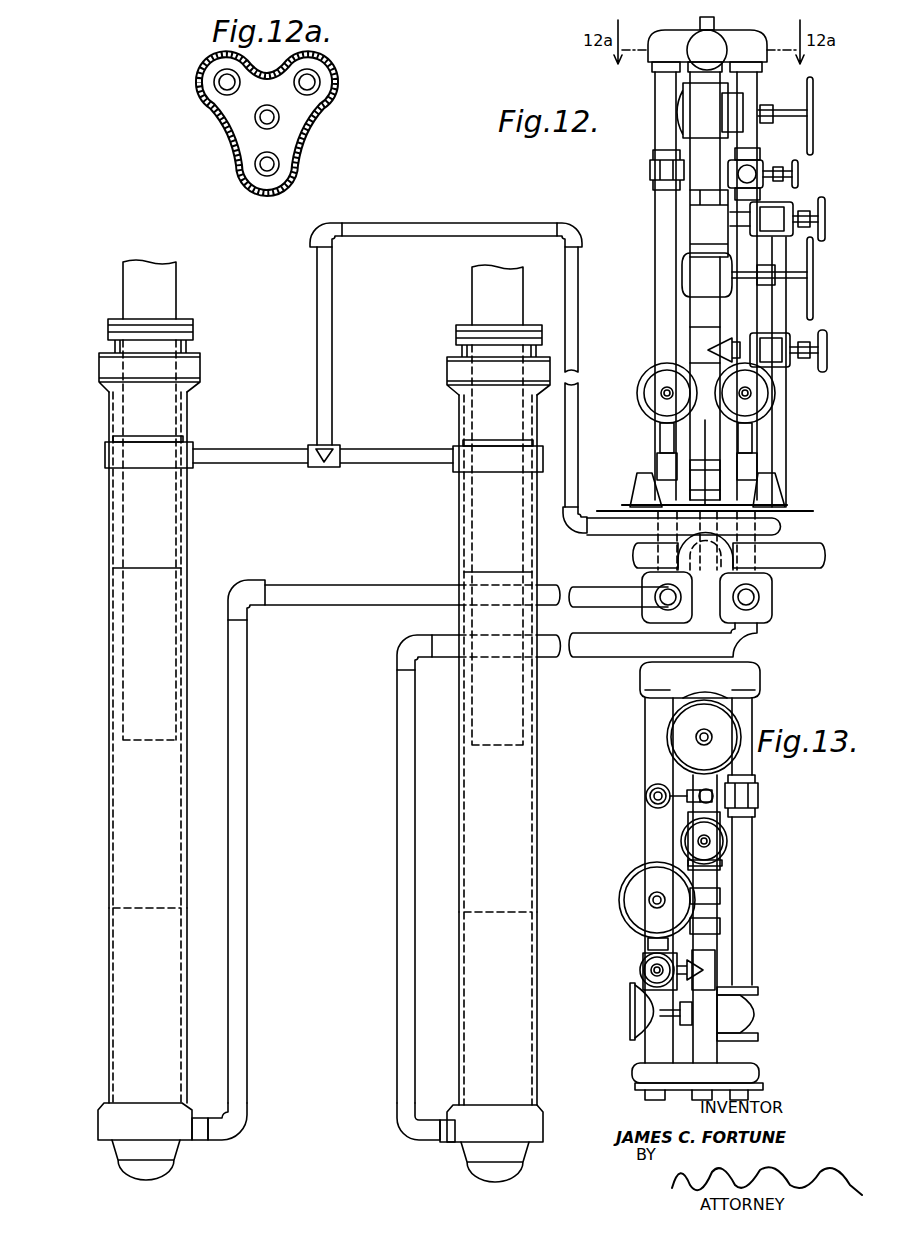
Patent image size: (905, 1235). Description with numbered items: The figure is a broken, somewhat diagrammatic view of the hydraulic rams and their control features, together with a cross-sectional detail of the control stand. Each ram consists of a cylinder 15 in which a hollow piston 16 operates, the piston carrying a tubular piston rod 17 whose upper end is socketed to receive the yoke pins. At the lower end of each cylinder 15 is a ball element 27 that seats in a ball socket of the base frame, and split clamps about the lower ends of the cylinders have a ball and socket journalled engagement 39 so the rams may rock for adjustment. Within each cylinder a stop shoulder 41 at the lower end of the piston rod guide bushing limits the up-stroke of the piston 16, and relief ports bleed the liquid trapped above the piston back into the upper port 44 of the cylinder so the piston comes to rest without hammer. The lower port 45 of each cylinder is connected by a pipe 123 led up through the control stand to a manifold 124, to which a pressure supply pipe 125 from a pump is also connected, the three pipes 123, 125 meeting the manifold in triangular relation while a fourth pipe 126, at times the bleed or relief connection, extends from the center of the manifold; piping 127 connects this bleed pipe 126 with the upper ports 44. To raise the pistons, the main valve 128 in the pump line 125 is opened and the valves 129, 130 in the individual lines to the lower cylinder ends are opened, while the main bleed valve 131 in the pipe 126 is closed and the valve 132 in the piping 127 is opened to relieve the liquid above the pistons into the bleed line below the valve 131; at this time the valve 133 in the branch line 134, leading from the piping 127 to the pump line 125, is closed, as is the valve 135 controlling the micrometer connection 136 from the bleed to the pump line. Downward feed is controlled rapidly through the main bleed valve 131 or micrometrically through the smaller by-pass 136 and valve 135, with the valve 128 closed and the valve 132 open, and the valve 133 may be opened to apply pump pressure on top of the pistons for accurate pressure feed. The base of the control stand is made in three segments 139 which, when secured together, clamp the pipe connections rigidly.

In FIG. 12, the cylinder 15 is at (109, 928).
In FIG. 12, the hollow piston 16 is at (113, 846).
In FIG. 12, the tubular piston rod 17 is at (176, 290).
In FIG. 12, the ball element 27 is at (150, 1178).
In FIG. 12, the ball and socket journalled engagement 39 is at (100, 1105).
In FIG. 12, the stop shoulder 41 is at (183, 440).
In FIG. 12, the upper port 44 is at (193, 465).
In FIG. 12, the lower port 45 is at (200, 1142).
In FIG. 12A, the pipe 123 is at (222, 92).
In FIG. 12, the pipe 123 is at (397, 800).
In FIG. 13, the pipe 123 is at (750, 934).
In FIG. 12A, the manifold 124 is at (300, 116).
In FIG. 12, the manifold 124 is at (656, 60).
In FIG. 13, the manifold 124 is at (755, 676).
In FIG. 12A, the pressure supply pipe 125 is at (282, 168).
In FIG. 12, the pressure supply pipe 125 is at (705, 237).
In FIG. 13, the pressure supply pipe 125 is at (648, 849).
In FIG. 12A, the fourth pipe 126 is at (256, 125).
In FIG. 12, the fourth pipe 126 is at (698, 195).
In FIG. 13, the fourth pipe 126 is at (756, 777).
In FIG. 12, the piping 127 is at (332, 420).
In FIG. 13, the piping 127 is at (705, 1052).
In FIG. 12, the main valve 128 is at (690, 275).
In FIG. 13, the main valve 128 is at (637, 908).
In FIG. 12, the valve 129 is at (640, 398).
In FIG. 12, the valve 130 is at (762, 396).
In FIG. 13, the valve 130 is at (762, 1016).
In FIG. 12, the main bleed valve 131 is at (690, 125).
In FIG. 13, the main bleed valve 131 is at (676, 728).
In FIG. 12, the valve 132 is at (783, 215).
In FIG. 13, the valve 132 is at (720, 843).
In FIG. 12, the valve 133 is at (783, 345).
In FIG. 13, the valve 133 is at (643, 970).
In FIG. 12, the branch line 134 is at (700, 352).
In FIG. 13, the valve 135 is at (648, 802).
In FIG. 12, the micrometer connection 136 is at (765, 168).
In FIG. 13, the micrometer connection 136 is at (668, 790).
In FIG. 12, the segment 139 is at (765, 476).
In FIG. 13, the segment 139 is at (640, 1086).